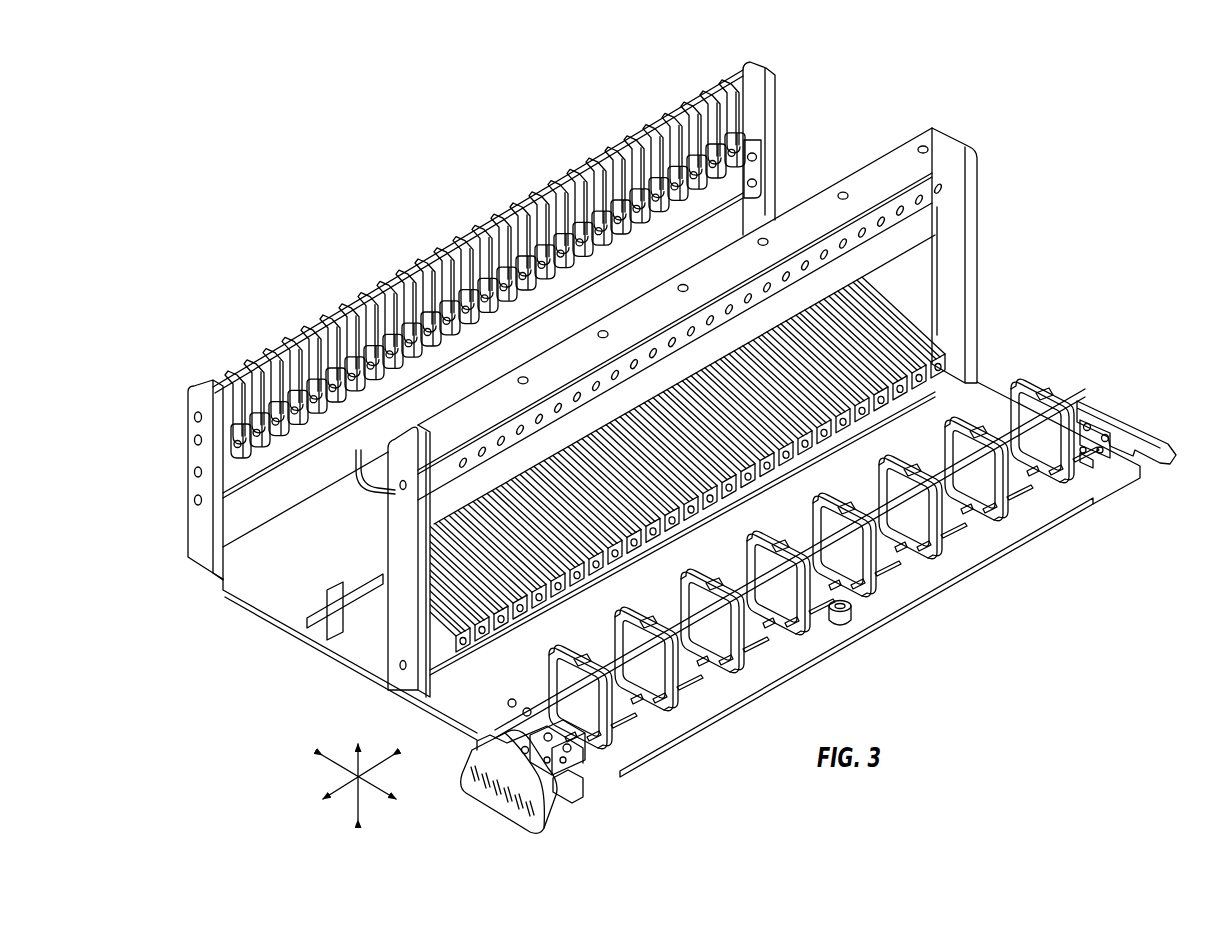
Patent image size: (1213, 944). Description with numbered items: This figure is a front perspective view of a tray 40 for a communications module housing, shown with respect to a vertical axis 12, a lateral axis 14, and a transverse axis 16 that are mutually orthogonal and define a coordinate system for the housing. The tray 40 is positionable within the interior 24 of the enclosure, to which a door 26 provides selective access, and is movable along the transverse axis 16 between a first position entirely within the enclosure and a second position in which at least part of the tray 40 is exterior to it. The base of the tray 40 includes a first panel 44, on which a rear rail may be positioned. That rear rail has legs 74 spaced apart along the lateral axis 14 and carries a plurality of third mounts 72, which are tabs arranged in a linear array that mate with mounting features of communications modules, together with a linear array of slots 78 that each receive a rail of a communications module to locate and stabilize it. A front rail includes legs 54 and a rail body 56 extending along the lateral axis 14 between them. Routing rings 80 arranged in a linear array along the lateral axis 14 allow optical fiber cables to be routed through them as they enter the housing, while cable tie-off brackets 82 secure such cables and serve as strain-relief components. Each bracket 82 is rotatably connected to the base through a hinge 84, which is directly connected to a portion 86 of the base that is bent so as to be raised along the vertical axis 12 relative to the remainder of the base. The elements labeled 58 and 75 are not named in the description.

The vertical axis 12 is at (358, 772).
The lateral axis 14 is at (343, 787).
The transverse axis 16 is at (335, 766).
The interior 24 is at (508, 562).
The door 26 is at (945, 568).
The tray 40 is at (505, 178).
The first panel 44 is at (268, 587).
The legs 54 is at (400, 534).
The rail body 56 is at (617, 323).
The latch on rail 58 is at (360, 423).
The third mounts 72 is at (277, 413).
The legs 74 is at (198, 520).
The mounting holes 75 is at (174, 436).
The slots 78 is at (309, 325).
The routing rings 80 is at (798, 643).
The cable tie-off brackets 82 is at (1128, 418).
The hinge 84 is at (528, 812).
The portion 86 is at (597, 760).